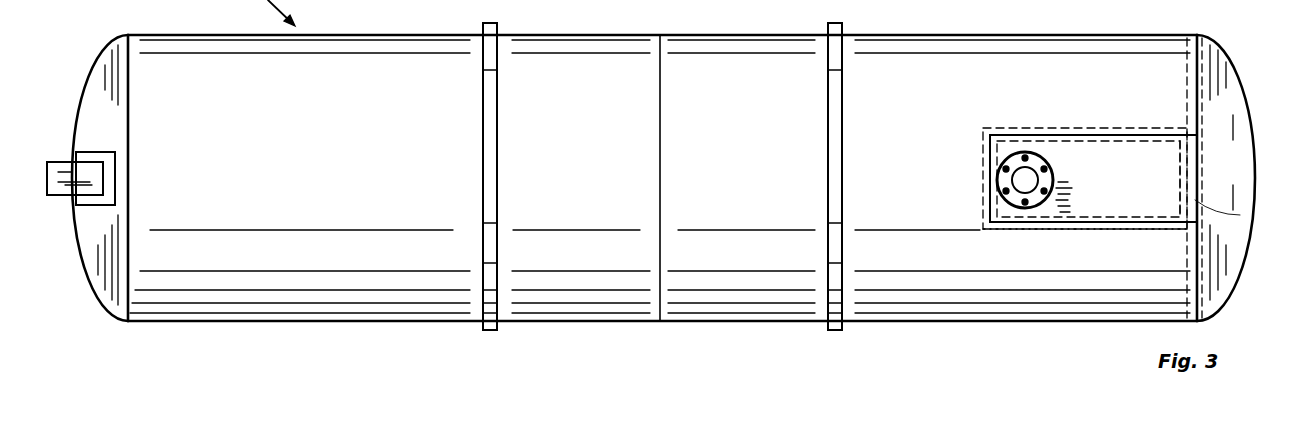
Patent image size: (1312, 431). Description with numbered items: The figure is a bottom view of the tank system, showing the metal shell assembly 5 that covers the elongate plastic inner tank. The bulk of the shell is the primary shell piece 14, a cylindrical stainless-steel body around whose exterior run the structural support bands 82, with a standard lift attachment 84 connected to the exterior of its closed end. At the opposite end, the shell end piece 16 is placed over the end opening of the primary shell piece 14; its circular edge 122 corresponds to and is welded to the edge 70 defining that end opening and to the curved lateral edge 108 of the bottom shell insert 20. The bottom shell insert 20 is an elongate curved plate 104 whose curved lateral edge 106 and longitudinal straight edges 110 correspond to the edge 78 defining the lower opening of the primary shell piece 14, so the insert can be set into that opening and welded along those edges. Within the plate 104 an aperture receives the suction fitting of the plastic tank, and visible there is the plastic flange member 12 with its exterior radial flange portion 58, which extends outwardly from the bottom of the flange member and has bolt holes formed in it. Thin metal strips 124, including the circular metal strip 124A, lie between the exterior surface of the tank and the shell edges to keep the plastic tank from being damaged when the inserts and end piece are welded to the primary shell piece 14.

The metal shell assembly 5 is at (776, 50).
The primary shell piece 14 is at (415, 47).
The shell end piece 16 is at (1237, 148).
The structural support bands 82 is at (500, 25).
The standard lift attachment 84 is at (70, 160).
The circular metal strip 124A is at (1190, 38).
The edge 70 is at (1200, 77).
The curved lateral edge 108 is at (1193, 200).
The thin metal strips 124 is at (1115, 130).
The longitudinal straight edges 110 is at (1025, 133).
The elongate curved plate 104 is at (1152, 155).
The exterior radial flange portion 58 is at (1005, 158).
The curved lateral edge 106 is at (997, 172).
The plastic flange member 12 is at (1000, 188).
The bottom shell insert 20 is at (1116, 183).
The edge 78 is at (1182, 218).
The circular edge 122 is at (1193, 252).